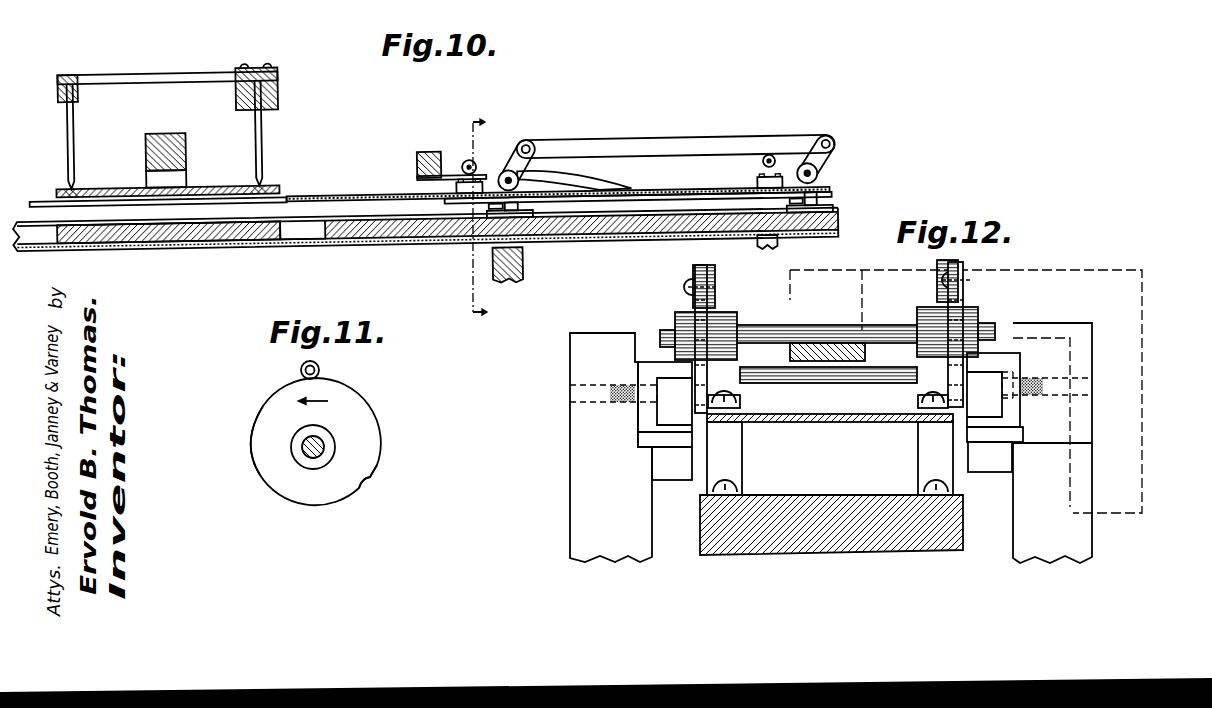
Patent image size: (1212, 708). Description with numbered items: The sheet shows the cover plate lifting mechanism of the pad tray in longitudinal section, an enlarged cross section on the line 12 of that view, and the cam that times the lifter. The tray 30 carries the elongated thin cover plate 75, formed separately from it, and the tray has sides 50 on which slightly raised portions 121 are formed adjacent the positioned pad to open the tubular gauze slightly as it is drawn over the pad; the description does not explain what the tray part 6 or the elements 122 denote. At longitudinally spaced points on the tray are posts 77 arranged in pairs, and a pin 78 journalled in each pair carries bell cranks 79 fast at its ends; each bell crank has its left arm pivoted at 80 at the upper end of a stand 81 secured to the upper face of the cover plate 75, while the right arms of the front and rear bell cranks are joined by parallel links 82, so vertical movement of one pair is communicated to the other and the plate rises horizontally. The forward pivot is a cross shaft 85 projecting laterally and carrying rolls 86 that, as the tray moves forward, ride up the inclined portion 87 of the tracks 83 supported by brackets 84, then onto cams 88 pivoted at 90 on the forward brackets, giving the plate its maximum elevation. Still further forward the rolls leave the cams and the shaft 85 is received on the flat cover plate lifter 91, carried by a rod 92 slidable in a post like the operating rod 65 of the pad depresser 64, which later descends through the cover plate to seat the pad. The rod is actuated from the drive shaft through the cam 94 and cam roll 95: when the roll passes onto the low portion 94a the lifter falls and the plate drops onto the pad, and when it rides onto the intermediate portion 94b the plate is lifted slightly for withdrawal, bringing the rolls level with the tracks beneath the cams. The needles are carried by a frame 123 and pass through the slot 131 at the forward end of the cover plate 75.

In FIG. 10, the slide block 6 is at (250, 238).
In FIG. 10, the section line 12- 12 is at (490, 213).
In FIG. 10, the tray 30 is at (170, 244).
In FIG. 12, the tray 30 is at (827, 505).
In FIG. 10, the sides of the tray 50 is at (312, 232).
In FIG. 10, the pad depresser 64 is at (214, 183).
In FIG. 10, the operating rod of the filling depresser 65 is at (167, 129).
In FIG. 10, the cover plate 75 is at (345, 194).
In FIG. 12, the cover plate 75 is at (822, 422).
In FIG. 10, the posts 77 is at (512, 219).
In FIG. 12, the posts 77 is at (736, 460).
In FIG. 10, the pin 78 is at (507, 176).
In FIG. 12, the pin 78 is at (845, 383).
In FIG. 10, the bell cranks 79 is at (532, 151).
In FIG. 12, the bell cranks 79 is at (690, 287).
In FIG. 10, the pivot of bell crank arm 80 is at (770, 161).
In FIG. 10, the stands 81 is at (455, 187).
In FIG. 12, the stands 81 is at (737, 396).
In FIG. 10, the parallel links 82 is at (640, 143).
In FIG. 12, the parallel links 82 is at (716, 279).
In FIG. 10, the tracks 83 is at (680, 199).
In FIG. 12, the tracks 83 is at (643, 442).
In FIG. 10, the brackets 84 is at (520, 272).
In FIG. 12, the brackets 84 is at (578, 518).
In FIG. 10, the cross shaft 85 is at (466, 163).
In FIG. 12, the cross shaft 85 is at (763, 327).
In FIG. 12, the rolls 86 is at (680, 316).
In FIG. 12, the inclined portion 87 is at (678, 470).
In FIG. 10, the cams 88 is at (595, 185).
In FIG. 12, the cams 88 is at (655, 362).
In FIG. 12, the cam pivot 90 is at (621, 384).
In FIG. 10, the cover plate lifter 91 is at (420, 158).
In FIG. 12, the cover plate lifter 91 is at (866, 352).
In FIG. 12, the rod 92 is at (1142, 440).
In FIG. 11, the cam 94 is at (374, 418).
In FIG. 11, the low portion of the cam 94a is at (328, 506).
In FIG. 11, the cam portion of intermediate height 94b is at (254, 460).
In FIG. 11, the cam roll 95 is at (320, 368).
In FIG. 10, the raised portions 121 is at (97, 219).
In FIG. 10, the pin 122 is at (69, 122).
In FIG. 10, the frame 123 is at (148, 69).
In FIG. 10, the slot 131 is at (292, 195).